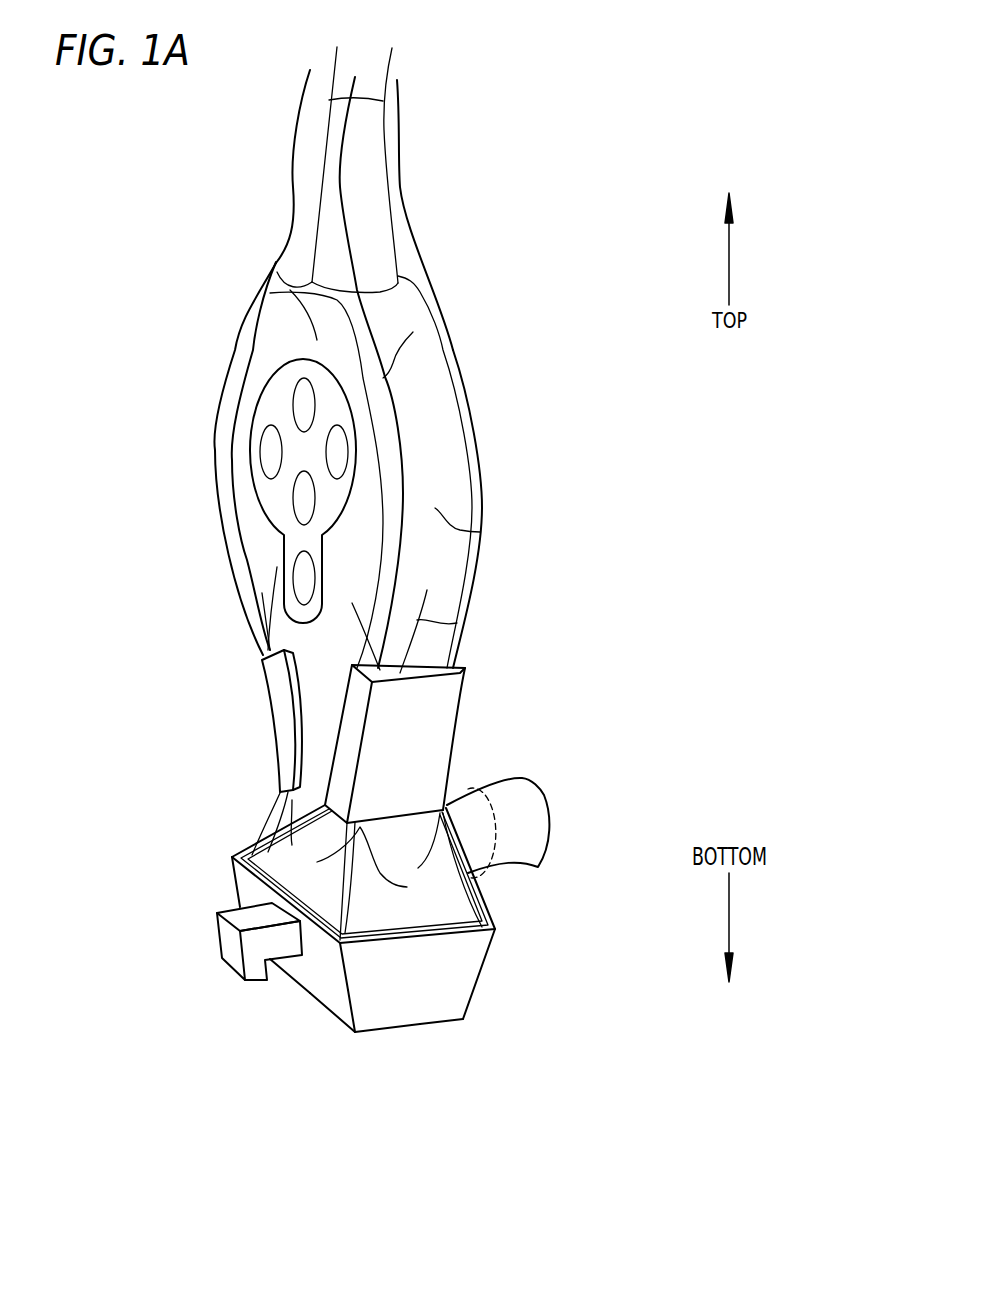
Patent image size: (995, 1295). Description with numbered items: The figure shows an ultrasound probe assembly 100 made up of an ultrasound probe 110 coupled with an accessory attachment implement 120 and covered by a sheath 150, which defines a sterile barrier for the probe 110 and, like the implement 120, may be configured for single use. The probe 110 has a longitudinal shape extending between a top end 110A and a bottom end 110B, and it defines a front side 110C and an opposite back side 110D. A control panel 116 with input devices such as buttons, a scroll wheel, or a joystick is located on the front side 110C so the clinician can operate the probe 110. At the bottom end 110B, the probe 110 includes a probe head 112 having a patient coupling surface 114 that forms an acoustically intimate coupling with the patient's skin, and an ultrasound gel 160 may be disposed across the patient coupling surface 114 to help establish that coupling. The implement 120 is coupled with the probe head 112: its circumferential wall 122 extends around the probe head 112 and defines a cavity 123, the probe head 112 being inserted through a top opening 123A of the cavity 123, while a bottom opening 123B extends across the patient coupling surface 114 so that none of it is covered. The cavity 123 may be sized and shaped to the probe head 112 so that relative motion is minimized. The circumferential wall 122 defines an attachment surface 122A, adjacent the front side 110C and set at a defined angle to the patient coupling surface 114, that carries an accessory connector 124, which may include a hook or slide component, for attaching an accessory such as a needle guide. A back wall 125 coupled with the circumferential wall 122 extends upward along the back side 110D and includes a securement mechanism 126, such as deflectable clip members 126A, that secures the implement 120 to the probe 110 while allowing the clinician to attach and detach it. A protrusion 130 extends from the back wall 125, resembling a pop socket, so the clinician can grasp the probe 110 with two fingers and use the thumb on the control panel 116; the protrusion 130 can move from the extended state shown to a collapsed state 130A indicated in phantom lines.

The ultrasound probe assembly 100 is at (492, 121).
The ultrasound probe 110 is at (277, 343).
The top end 110A is at (462, 303).
The bottom end 110B is at (320, 1018).
The front side 110C is at (316, 682).
The back side 110D is at (492, 503).
The probe head 112 is at (266, 886).
The patient coupling surface 114 is at (367, 1040).
The control panel 116 is at (272, 543).
The accessory attachment implement 120 is at (458, 978).
The circumferential wall 122 is at (482, 955).
The attachment surface 122A is at (328, 978).
The cavity 123 is at (420, 925).
The top opening 123A is at (253, 857).
The bottom opening 123B is at (467, 1042).
The accessory connector 124 is at (232, 946).
The back wall 125 is at (448, 747).
The securement mechanism 126 is at (472, 690).
The housing side face 126A is at (348, 770).
The protrusion 130 is at (548, 820).
The collapsed state 130A is at (481, 782).
The sheath 150 is at (460, 370).
The ultrasound gel 160 is at (413, 1027).